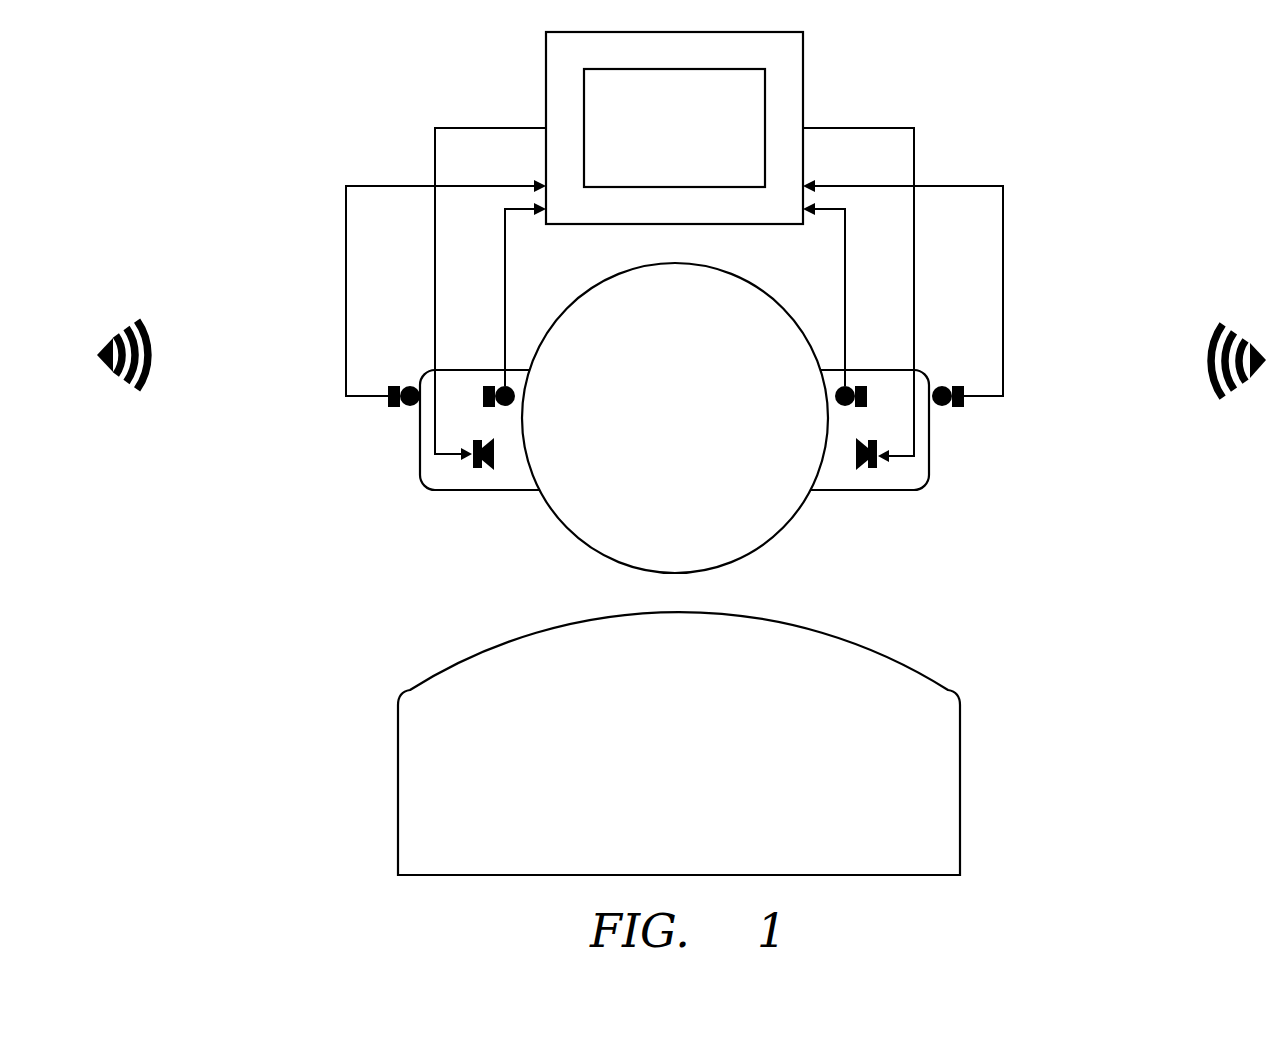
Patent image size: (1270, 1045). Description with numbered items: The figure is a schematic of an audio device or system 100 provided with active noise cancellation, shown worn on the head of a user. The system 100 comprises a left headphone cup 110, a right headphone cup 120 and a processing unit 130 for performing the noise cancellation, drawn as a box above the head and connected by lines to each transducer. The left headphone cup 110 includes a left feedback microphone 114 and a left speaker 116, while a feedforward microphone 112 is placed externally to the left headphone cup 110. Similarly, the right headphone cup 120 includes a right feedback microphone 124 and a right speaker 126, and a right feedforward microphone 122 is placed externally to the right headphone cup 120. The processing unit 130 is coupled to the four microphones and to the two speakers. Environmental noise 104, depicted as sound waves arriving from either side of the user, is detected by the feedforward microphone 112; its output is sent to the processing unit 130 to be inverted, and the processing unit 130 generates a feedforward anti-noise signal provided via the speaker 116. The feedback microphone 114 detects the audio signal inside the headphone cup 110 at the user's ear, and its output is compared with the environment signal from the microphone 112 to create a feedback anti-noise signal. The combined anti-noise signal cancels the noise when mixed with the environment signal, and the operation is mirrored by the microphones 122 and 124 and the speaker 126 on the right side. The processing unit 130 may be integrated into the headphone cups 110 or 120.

The system 100 is at (251, 787).
The environmental noise 104 is at (148, 381).
The left headphone cup 110 is at (420, 460).
The feedforward microphone 112 is at (383, 400).
The left feedback microphone 114 is at (508, 386).
The left speaker 116 is at (481, 472).
The right headphone cup 120 is at (930, 460).
The right feedforward microphone 122 is at (968, 402).
The right feedback microphone 124 is at (842, 386).
The right speaker 126 is at (866, 472).
The processing unit 130 is at (803, 86).